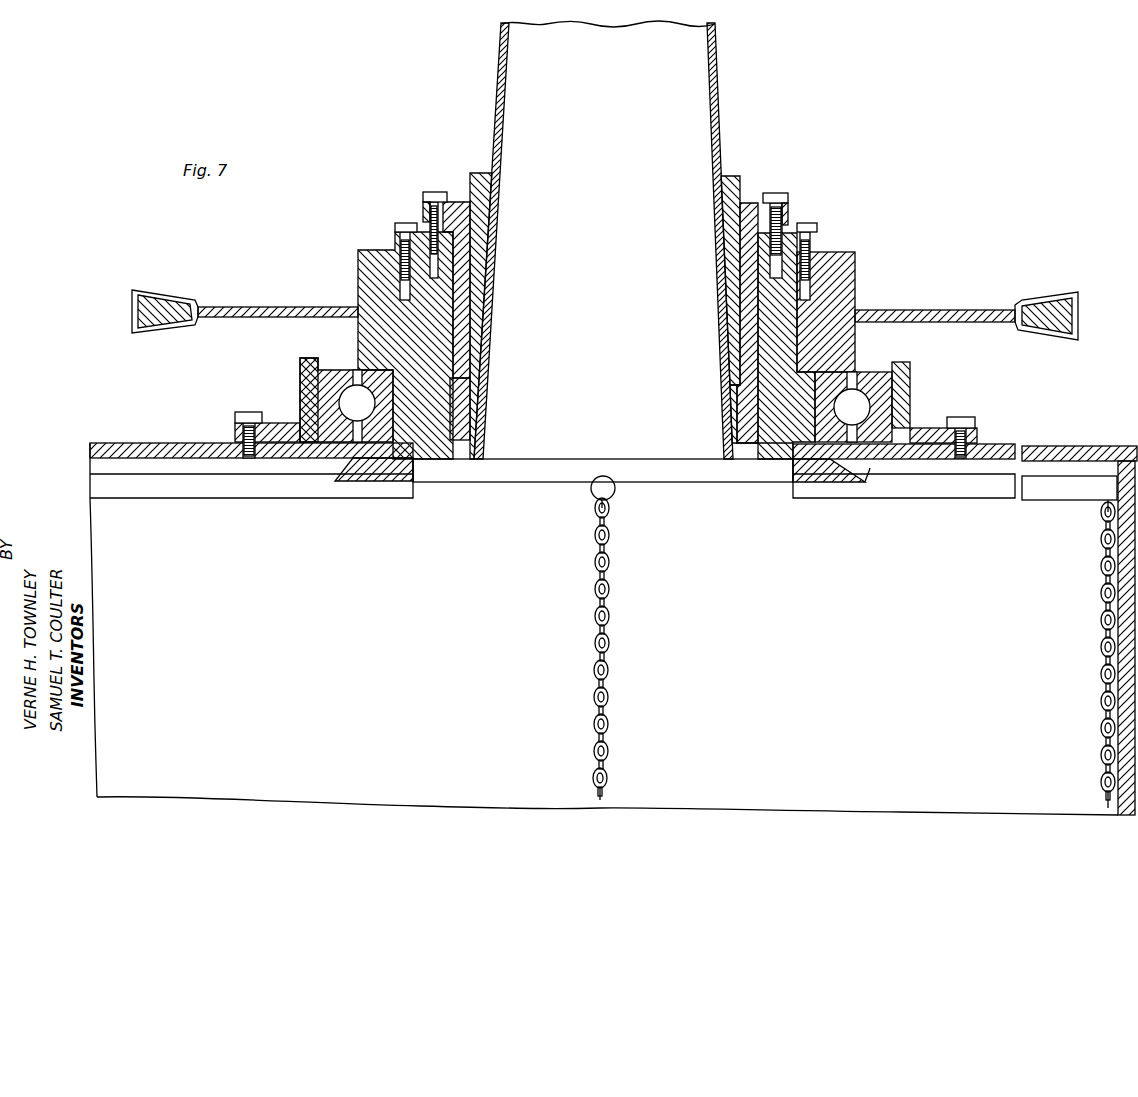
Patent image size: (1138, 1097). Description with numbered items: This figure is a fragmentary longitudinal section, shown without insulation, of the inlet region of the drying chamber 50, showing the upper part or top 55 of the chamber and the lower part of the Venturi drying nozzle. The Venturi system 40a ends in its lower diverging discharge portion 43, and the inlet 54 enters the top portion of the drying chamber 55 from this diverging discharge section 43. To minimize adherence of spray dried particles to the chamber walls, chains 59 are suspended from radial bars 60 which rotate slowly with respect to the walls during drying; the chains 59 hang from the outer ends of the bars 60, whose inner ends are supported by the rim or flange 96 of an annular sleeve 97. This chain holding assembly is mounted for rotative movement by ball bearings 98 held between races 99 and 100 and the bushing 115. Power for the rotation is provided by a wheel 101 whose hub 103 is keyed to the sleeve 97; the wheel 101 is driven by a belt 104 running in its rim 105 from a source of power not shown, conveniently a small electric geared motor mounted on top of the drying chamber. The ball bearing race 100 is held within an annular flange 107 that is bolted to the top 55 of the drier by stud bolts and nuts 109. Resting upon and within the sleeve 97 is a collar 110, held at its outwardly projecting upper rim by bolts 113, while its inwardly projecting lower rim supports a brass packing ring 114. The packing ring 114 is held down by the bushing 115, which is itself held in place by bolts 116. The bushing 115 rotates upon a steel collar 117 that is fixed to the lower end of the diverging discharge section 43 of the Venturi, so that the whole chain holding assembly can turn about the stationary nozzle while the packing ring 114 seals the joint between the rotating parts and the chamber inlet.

The Venturi system 40a is at (716, 44).
The diverging discharge portion 43 is at (718, 108).
The steel collar 117 is at (738, 178).
The bushing 115 is at (753, 205).
The bolts 116 is at (432, 192).
The bolts 113 is at (405, 222).
The hub 103 is at (855, 264).
The wheel 101 is at (964, 310).
The rim 105 is at (1070, 296).
The belt 104 is at (1078, 318).
The race 99 is at (848, 372).
The ball bearings 98 is at (872, 358).
The race 100 is at (880, 378).
The annular flange 107 is at (912, 379).
The stud bolts and nuts 109 is at (240, 412).
The brass packing ring 114 is at (731, 410).
The collar 110 is at (760, 455).
The annular sleeve 97 is at (792, 468).
The rim or flange 96 is at (868, 470).
The inlet 54 is at (575, 460).
The radial bars 60 is at (280, 490).
The chains 59 is at (612, 628).
The upper portion of the drying chamber 55 is at (1052, 446).
The chamber 50 is at (1095, 447).